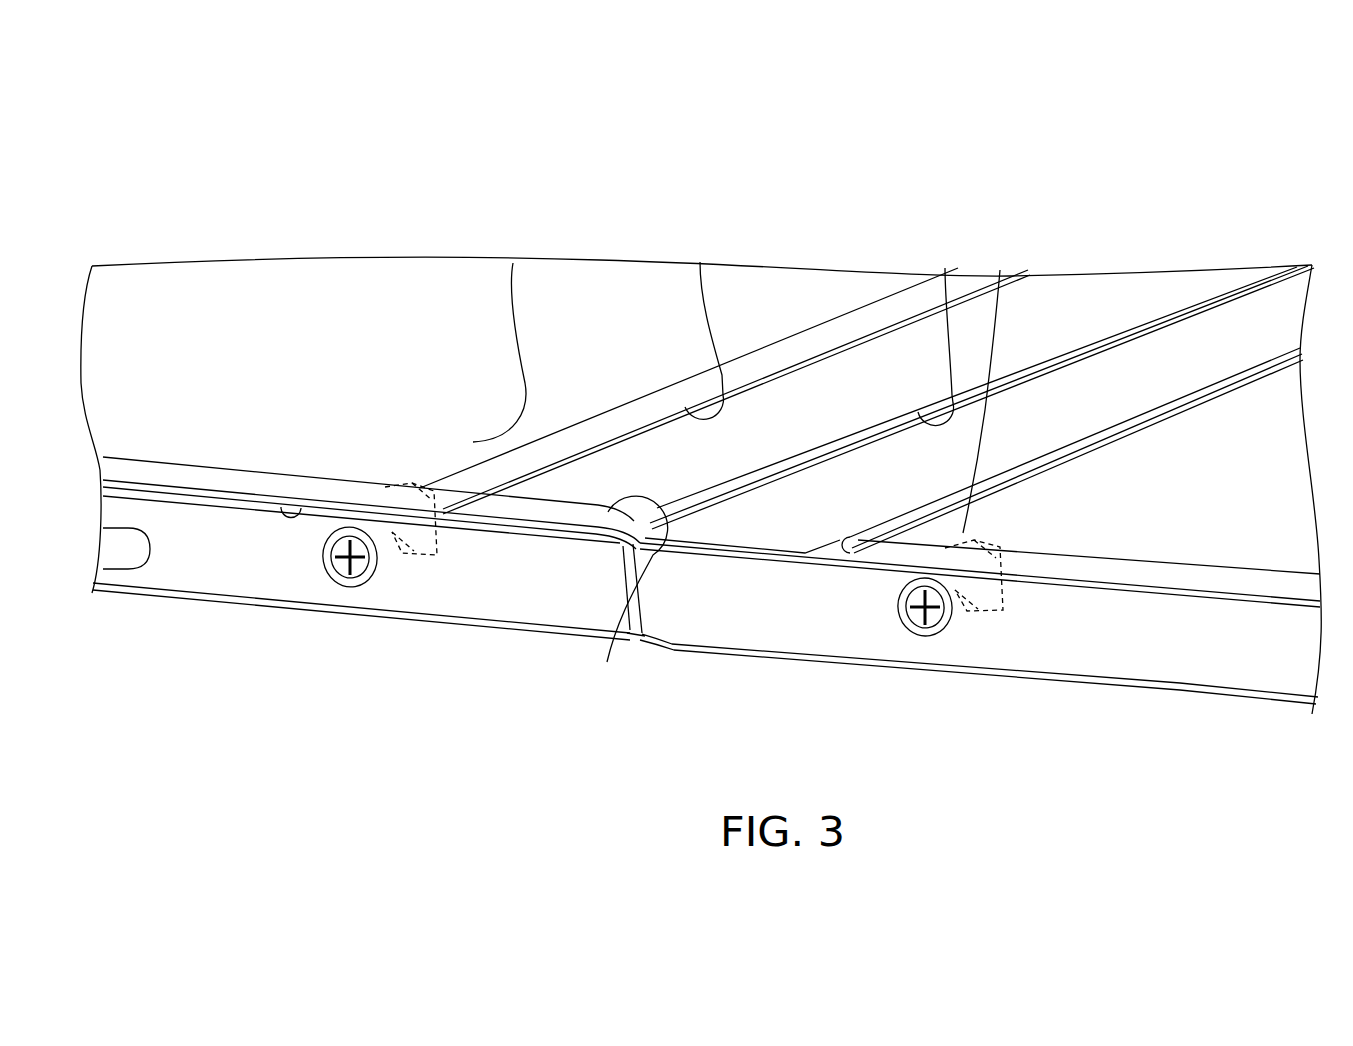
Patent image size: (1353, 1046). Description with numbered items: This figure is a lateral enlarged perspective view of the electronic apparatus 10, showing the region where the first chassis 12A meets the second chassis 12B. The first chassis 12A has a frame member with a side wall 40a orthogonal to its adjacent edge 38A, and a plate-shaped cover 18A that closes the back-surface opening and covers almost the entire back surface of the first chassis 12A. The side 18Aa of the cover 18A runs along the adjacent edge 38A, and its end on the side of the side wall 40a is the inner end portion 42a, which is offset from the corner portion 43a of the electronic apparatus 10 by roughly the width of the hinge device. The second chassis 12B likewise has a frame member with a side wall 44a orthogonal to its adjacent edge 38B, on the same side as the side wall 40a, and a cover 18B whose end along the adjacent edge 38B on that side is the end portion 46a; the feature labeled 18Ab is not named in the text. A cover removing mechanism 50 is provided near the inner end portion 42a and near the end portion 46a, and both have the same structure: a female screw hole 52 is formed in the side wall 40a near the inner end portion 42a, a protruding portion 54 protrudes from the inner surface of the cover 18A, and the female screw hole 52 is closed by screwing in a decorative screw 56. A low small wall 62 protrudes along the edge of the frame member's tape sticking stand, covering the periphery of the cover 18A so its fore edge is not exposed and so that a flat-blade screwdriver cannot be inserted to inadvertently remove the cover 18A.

The electronic apparatus 10 is at (1262, 130).
The first chassis 12A is at (445, 200).
The second chassis 12B is at (1135, 200).
The cover 18A is at (563, 287).
The side of the cover along the adjacent edge 18Aa is at (700, 262).
The notch of first back plate 18Ab is at (282, 507).
The cover 18B is at (1171, 441).
The adjacent edge 38A is at (945, 268).
The adjacent edge 38B is at (1081, 350).
The side wall 40a is at (216, 583).
The inner end portion 42a is at (513, 263).
The corner portion 43a is at (629, 598).
The side wall 44a is at (1203, 683).
The end portion 46a is at (1000, 270).
The cover removing mechanism 50 is at (399, 645).
The female screw hole 52 is at (388, 484).
The protruding portion 54 is at (437, 478).
The decorative screw 56 is at (340, 588).
The small wall 62 is at (228, 483).